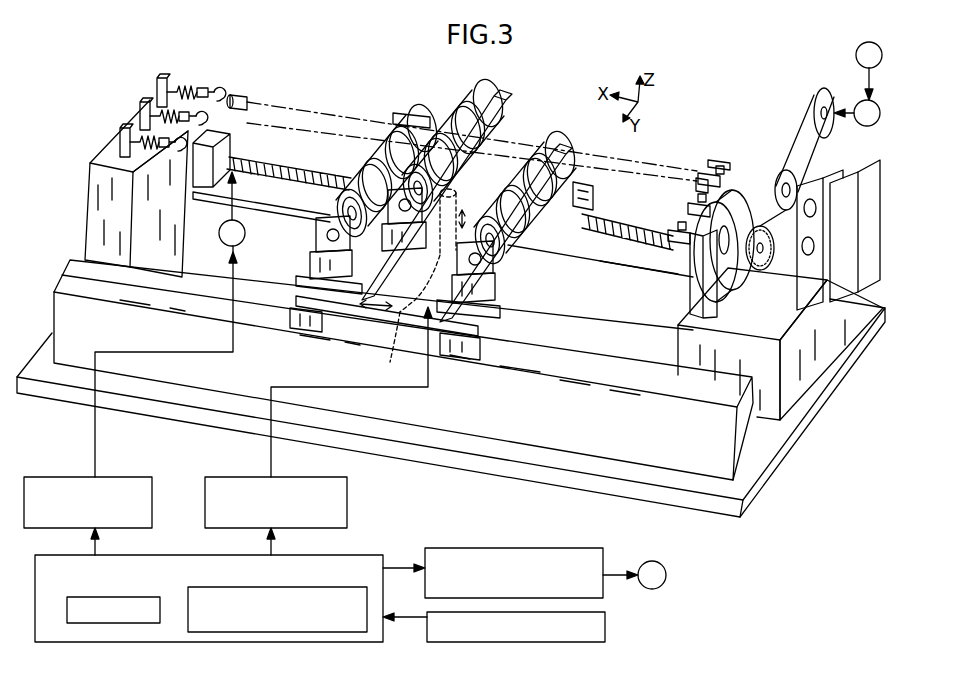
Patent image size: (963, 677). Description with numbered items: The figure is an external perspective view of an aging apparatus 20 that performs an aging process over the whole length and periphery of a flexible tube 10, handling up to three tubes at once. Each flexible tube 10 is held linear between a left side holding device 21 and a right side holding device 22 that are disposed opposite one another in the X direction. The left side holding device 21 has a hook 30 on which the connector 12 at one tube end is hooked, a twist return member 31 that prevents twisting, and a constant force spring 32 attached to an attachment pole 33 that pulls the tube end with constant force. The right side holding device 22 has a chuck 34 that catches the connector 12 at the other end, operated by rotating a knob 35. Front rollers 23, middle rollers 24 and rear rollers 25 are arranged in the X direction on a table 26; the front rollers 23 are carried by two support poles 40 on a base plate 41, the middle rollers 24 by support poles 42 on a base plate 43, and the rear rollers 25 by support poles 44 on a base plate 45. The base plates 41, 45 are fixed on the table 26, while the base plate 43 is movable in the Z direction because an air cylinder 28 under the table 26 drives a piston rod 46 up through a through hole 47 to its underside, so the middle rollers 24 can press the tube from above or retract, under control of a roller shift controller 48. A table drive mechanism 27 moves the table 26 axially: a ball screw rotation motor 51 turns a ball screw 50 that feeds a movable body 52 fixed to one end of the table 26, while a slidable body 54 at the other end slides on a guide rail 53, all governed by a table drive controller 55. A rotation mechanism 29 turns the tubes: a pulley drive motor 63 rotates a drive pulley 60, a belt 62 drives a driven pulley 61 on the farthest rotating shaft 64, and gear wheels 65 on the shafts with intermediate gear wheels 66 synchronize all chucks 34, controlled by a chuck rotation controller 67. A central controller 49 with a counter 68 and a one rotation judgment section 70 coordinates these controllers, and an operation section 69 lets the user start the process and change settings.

The flexible tube 10 is at (327, 110).
The connector 12 is at (226, 106).
The aging apparatus 20 is at (695, 522).
The left side holding device 21 is at (171, 99).
The right side holding device 22 is at (731, 158).
The front rollers 23 is at (350, 188).
The middle rollers 24 is at (443, 120).
The rear rollers 25 is at (525, 250).
The table 26 is at (345, 326).
The table drive mechanism 27 is at (258, 152).
The air cylinder 28 is at (389, 349).
The rotation mechanism 29 is at (807, 95).
The hook 30 is at (222, 92).
The twist return member 31 is at (204, 87).
The constant force spring 32 is at (184, 86).
The attachment pole 33 is at (162, 76).
The chuck 34 is at (717, 168).
The knob 35 is at (718, 152).
The support poles 40 is at (316, 232).
The base plate 41 is at (300, 282).
The support poles 42 is at (496, 94).
The base plate 43 is at (392, 244).
The support poles 44 is at (555, 146).
The base plate 45 is at (485, 313).
The piston rod 46 is at (437, 278).
The through hole 47 is at (452, 268).
The roller shift controller 48 is at (236, 476).
The central controller 49 is at (35, 582).
The ball screw 50 is at (278, 163).
The ball screw rotation motor 51 is at (246, 238).
The movable body 52 is at (592, 216).
The guide rail 53 is at (612, 360).
The slidable body 54 is at (296, 330).
The table drive controller 55 is at (59, 476).
The drive pulley 60 is at (829, 124).
The driven pulley 61 is at (788, 168).
The belt 62 is at (798, 130).
The pulley drive motor 63 is at (871, 127).
The rotating shaft 64 is at (755, 273).
The gear wheels 65 is at (836, 190).
The gear wheels 66 is at (818, 207).
The chuck rotation controller 67 is at (548, 548).
The counter 68 is at (67, 600).
The operation section 69 is at (608, 630).
The one rotation judgment section 70 is at (188, 592).